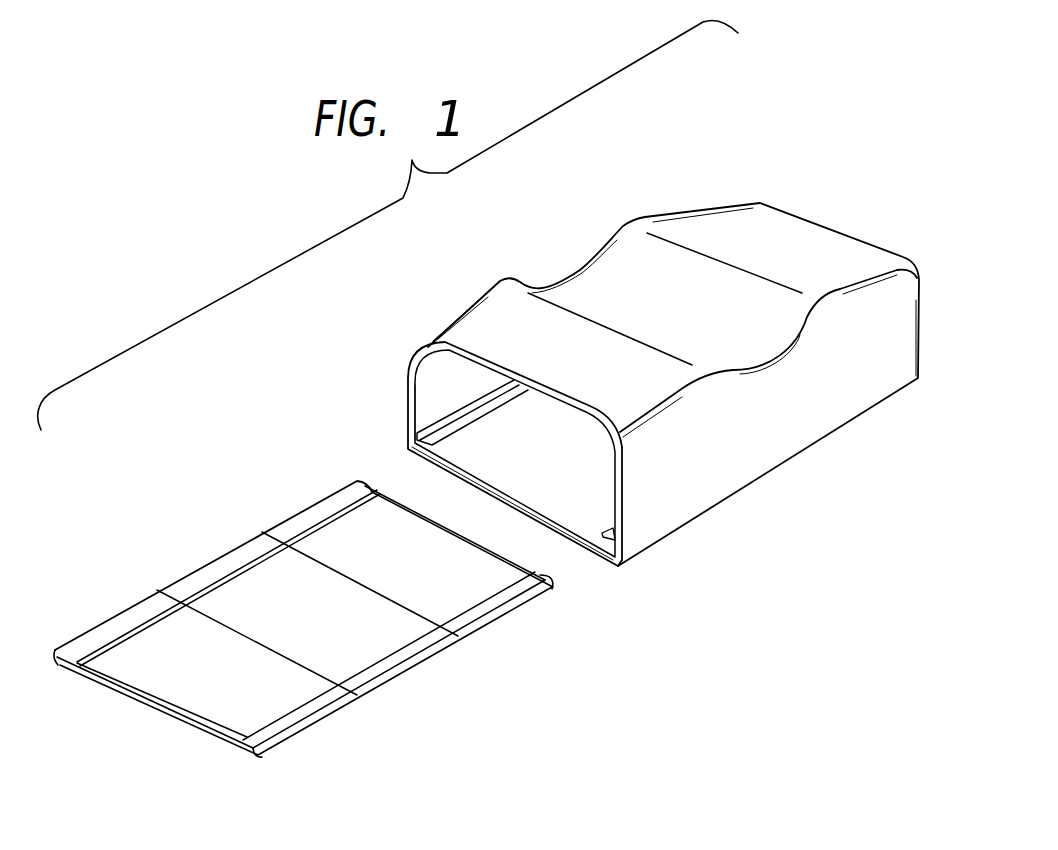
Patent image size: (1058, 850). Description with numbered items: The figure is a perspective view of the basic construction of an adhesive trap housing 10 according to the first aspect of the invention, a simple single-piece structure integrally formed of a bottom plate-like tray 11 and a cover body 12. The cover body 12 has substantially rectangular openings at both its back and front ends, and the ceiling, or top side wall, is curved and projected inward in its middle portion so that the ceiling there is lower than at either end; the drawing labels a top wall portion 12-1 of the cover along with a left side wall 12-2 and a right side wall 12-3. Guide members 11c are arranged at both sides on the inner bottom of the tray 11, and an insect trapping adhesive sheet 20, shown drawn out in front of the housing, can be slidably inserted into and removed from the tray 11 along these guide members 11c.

The adhesive trap housing 10 is at (608, 243).
The tray 11 is at (582, 522).
The guide members 11c is at (477, 425).
The cover body 12 is at (497, 294).
The top wall of cover 12-1 is at (472, 325).
The left side wall 12-2 is at (435, 392).
The right side wall 12-3 is at (732, 472).
The insect trapping adhesive sheet 20 is at (190, 577).